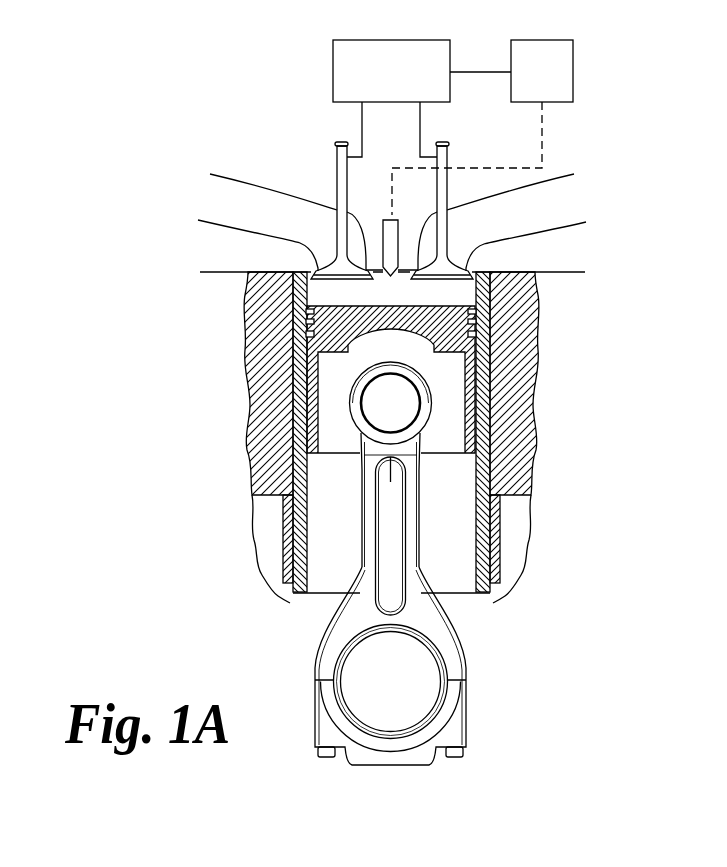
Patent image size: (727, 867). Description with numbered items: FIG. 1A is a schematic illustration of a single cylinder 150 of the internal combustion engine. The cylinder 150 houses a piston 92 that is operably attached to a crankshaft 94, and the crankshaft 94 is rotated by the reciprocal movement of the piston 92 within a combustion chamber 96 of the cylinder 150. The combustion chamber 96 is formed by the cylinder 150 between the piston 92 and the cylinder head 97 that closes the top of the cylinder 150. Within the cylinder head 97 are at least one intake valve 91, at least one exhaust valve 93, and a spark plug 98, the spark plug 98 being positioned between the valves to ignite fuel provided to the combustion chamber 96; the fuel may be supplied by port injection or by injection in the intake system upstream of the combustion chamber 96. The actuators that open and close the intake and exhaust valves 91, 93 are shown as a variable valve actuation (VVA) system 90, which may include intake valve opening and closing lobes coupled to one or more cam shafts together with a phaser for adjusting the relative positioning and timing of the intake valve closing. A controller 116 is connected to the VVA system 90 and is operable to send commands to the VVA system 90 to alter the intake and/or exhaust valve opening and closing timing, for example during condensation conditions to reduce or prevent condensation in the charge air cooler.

The cylinder 150 is at (200, 347).
The cylinder head 97 is at (561, 271).
The combustion chamber 96 is at (462, 293).
The piston 92 is at (440, 335).
The crankshaft 94 is at (390, 687).
The intake valve 91 is at (336, 143).
The exhaust valve 93 is at (448, 143).
The spark plug 98 is at (382, 238).
The variable valve actuation (VVA) system 90 is at (403, 86).
The controller 116 is at (560, 86).